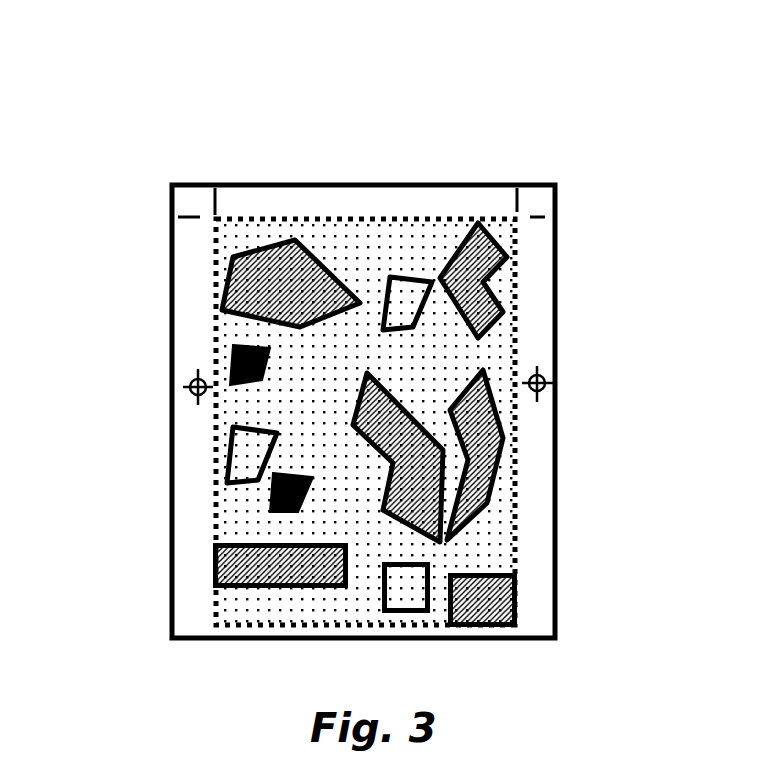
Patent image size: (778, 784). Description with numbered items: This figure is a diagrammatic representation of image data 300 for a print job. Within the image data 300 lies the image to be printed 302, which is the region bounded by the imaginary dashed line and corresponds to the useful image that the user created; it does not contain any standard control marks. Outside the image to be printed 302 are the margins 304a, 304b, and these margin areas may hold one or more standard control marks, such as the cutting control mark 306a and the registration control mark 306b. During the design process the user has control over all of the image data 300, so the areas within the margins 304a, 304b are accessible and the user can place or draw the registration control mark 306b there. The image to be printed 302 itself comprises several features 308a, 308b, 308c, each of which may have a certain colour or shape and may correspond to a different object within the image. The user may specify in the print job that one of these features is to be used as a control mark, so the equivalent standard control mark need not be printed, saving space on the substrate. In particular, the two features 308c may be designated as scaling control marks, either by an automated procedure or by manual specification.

The image data 300 is at (330, 78).
The image to be printed 302 is at (375, 218).
The margin 304a is at (170, 178).
The margin 304b is at (153, 213).
The cutting control mark 306a is at (552, 216).
The registration control mark 306b is at (550, 363).
The feature 308a is at (340, 274).
The feature 308b is at (383, 320).
The feature 308c is at (267, 372).